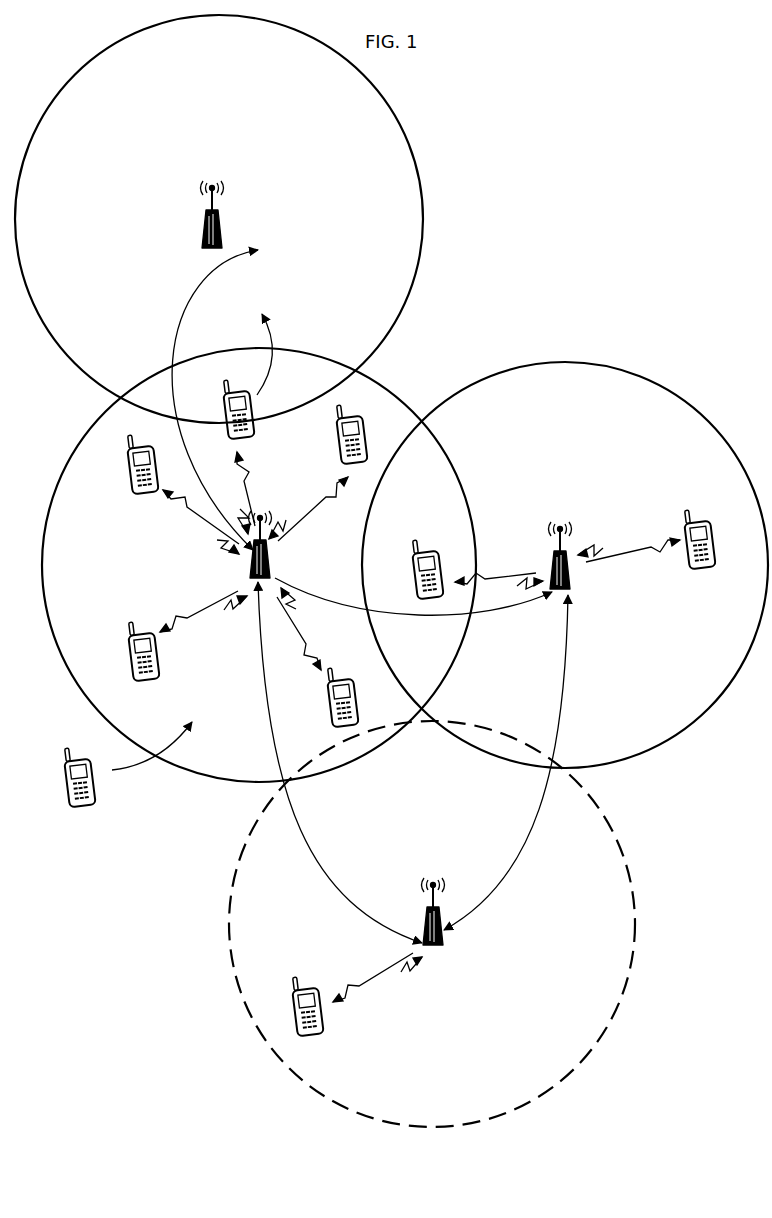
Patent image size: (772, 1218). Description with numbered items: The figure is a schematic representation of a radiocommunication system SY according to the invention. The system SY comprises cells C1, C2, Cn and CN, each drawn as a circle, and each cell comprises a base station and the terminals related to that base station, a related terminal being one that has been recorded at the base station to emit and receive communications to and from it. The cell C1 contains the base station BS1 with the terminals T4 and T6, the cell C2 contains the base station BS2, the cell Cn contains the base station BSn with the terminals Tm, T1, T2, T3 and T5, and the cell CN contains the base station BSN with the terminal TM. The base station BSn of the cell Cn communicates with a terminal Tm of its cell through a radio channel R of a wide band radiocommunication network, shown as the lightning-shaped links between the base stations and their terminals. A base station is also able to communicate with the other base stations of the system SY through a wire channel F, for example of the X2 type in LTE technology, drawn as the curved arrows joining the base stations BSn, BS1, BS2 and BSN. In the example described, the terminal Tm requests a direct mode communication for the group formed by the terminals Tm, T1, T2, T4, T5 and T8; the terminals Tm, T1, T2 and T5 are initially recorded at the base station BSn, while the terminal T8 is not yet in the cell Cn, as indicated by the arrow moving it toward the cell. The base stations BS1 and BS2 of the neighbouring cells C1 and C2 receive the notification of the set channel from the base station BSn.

The radiocommunication system SY is at (516, 180).
The cell C2 is at (421, 258).
The cell Cn is at (98, 421).
The cell C1 is at (677, 738).
The cell CN is at (636, 922).
The base station BS2 is at (222, 224).
The base station BSn is at (272, 575).
The base station BS1 is at (573, 550).
The base station BSN is at (436, 946).
The terminal Tm is at (227, 411).
The terminal T1 is at (136, 493).
The terminal T2 is at (160, 688).
The terminal T3 is at (340, 441).
The terminal T4 is at (441, 565).
The terminal T5 is at (328, 722).
The terminal T6 is at (702, 573).
The terminal T8 is at (95, 807).
The terminal TM is at (321, 1039).
The radio channel R is at (244, 472).
The wire channel F is at (415, 621).